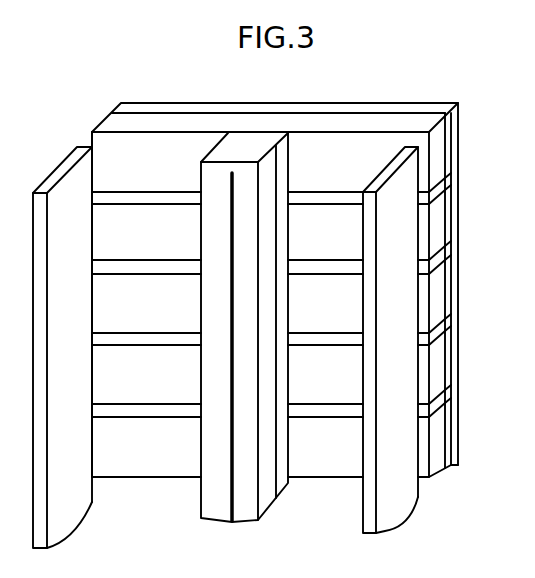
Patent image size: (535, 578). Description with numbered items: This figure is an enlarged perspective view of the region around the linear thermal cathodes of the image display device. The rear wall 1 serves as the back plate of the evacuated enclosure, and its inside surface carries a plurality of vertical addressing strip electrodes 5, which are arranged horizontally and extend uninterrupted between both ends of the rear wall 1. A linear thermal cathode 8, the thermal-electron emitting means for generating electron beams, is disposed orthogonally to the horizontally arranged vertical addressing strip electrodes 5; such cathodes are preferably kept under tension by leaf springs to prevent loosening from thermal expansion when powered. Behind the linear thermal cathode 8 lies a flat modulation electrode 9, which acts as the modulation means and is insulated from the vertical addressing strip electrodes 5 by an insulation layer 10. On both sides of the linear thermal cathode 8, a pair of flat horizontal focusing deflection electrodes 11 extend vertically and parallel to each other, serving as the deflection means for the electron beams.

The rear wall 1 is at (458, 176).
The vertical addressing strip electrodes 5 is at (438, 226).
The linear thermal cathode 8 is at (236, 522).
The modulation electrode 9 is at (241, 150).
The insulation layer 10 is at (268, 135).
The horizontal focusing deflection electrodes 11 is at (72, 512).